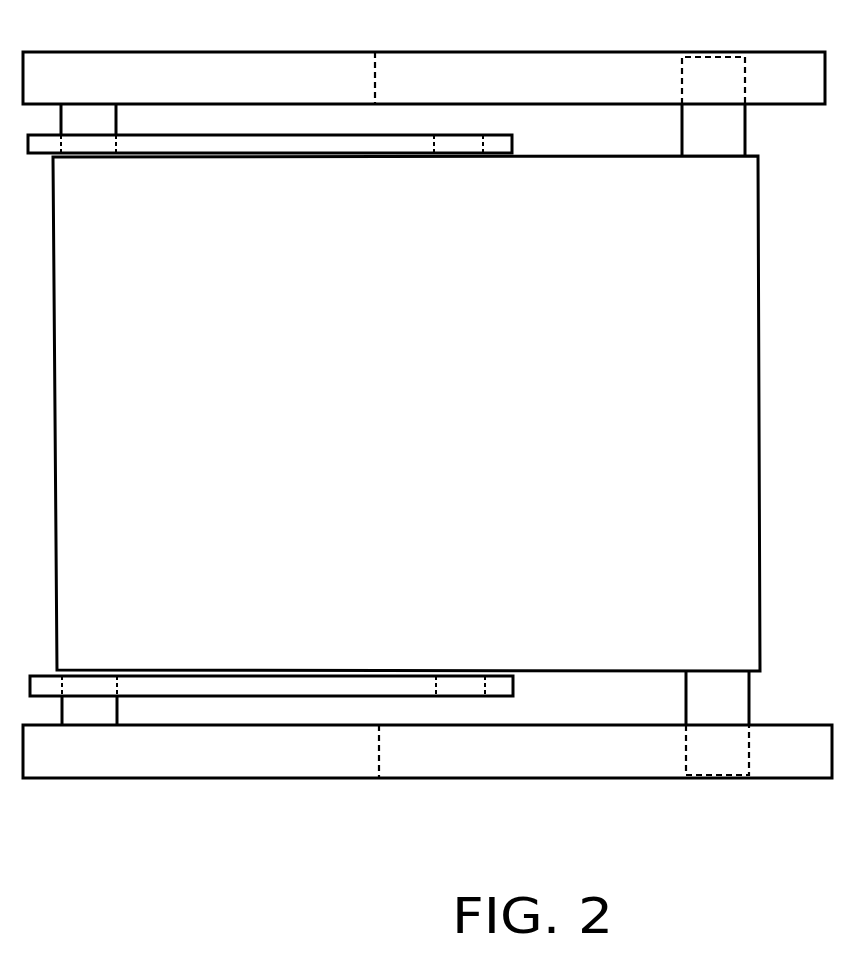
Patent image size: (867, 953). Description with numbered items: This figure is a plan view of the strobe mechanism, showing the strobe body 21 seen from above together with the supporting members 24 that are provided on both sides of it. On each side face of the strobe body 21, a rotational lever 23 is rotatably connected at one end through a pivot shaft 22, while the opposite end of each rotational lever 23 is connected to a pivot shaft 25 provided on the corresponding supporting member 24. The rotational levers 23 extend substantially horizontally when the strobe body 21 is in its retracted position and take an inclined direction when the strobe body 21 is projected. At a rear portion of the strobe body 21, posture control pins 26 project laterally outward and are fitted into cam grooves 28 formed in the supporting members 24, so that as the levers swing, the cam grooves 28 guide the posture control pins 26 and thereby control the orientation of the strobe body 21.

The strobe body 21 is at (405, 437).
The pivot shaft 22 is at (457, 158).
The rotational lever 23 is at (248, 145).
The supporting member 24 is at (158, 63).
The pivot shaft 25 is at (85, 115).
The posture control pin 26 is at (704, 143).
The cam groove 28 is at (378, 82).